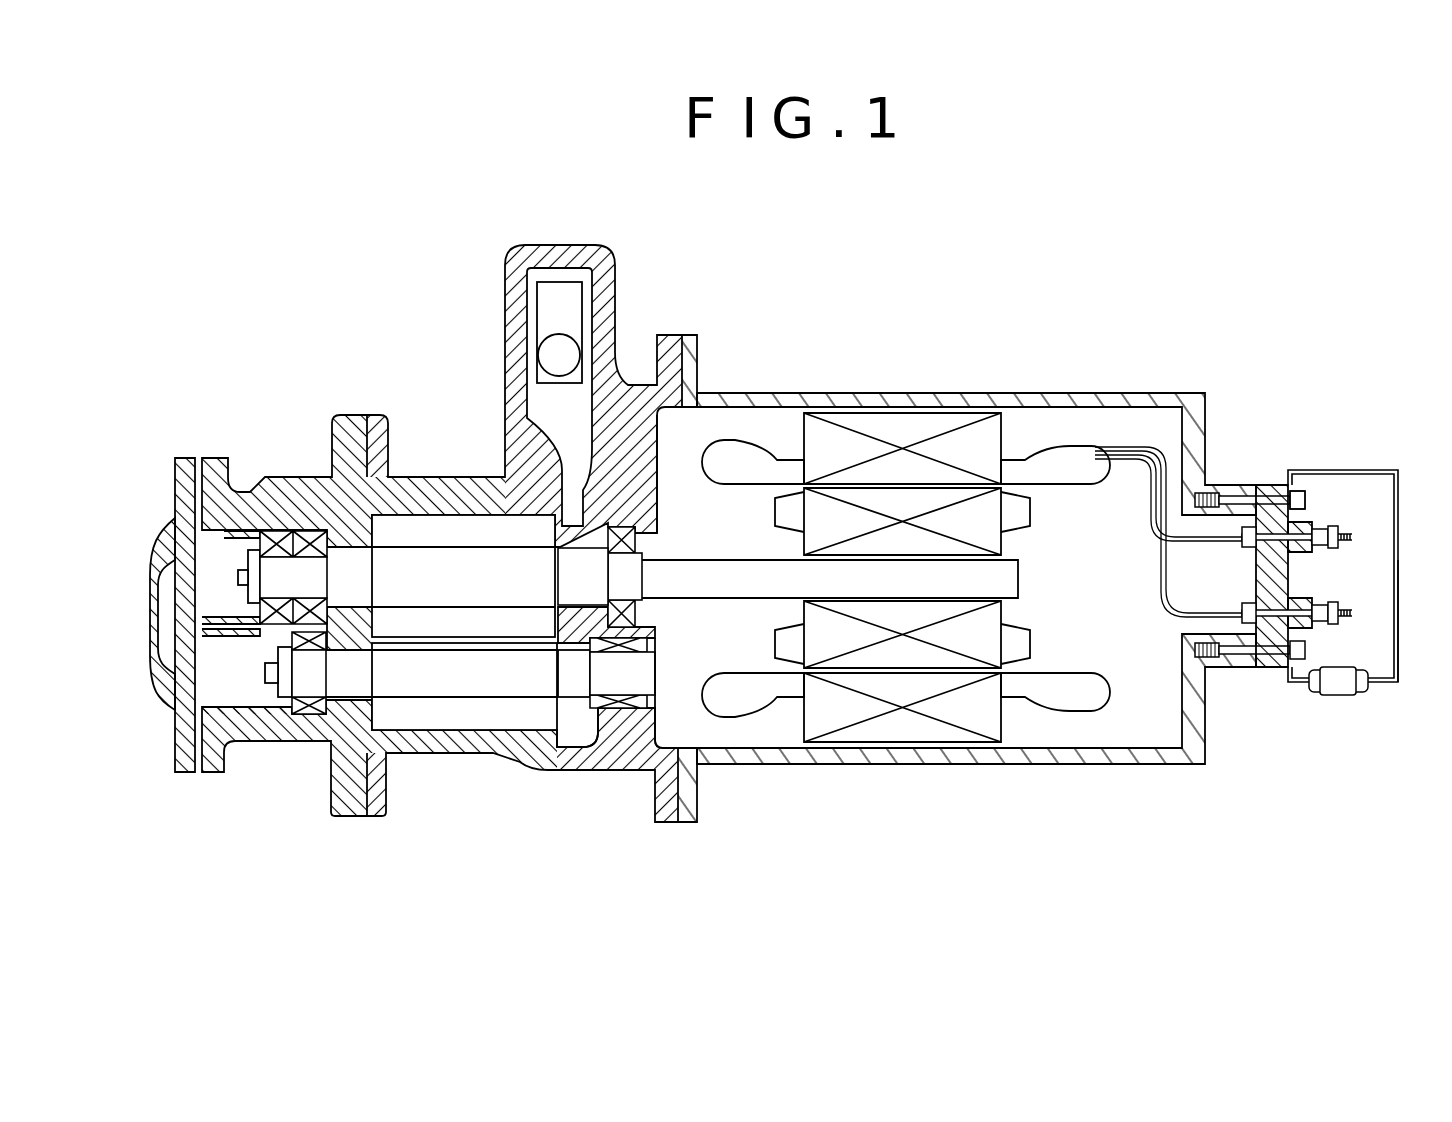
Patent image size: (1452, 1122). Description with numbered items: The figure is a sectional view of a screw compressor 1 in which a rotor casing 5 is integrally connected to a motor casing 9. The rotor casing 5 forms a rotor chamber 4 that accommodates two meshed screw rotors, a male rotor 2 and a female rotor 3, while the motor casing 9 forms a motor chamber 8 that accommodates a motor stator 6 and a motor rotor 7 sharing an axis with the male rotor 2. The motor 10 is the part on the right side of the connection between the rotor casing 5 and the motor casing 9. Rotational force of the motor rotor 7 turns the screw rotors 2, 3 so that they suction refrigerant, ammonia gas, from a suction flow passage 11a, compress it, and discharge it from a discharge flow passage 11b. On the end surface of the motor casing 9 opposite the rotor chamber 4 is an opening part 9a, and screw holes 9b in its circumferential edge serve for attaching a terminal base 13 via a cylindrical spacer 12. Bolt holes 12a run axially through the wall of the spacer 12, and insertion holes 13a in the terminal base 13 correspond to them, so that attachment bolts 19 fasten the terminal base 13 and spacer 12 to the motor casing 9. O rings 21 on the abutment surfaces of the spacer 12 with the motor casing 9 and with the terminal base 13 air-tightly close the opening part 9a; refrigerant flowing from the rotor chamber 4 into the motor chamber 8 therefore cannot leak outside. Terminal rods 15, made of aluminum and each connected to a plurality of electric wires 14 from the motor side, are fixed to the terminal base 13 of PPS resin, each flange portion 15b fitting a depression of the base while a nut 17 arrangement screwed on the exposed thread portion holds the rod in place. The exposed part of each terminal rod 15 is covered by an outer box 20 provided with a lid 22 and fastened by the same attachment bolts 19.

The screw compressor 1 is at (711, 308).
The male rotor 2 is at (415, 553).
The female rotor 3 is at (425, 685).
The rotor chamber 4 is at (573, 735).
The rotor casing 5 is at (488, 762).
The motor stator 6 is at (888, 420).
The motor rotor 7 is at (943, 505).
The motor chamber 8 is at (1130, 727).
The motor casing 9 is at (1076, 390).
The opening part 9a is at (1192, 628).
The screw holes 9b is at (1200, 485).
The motor 10 is at (1005, 334).
The suction flow passage 11a is at (543, 452).
The discharge flow passage 11b is at (310, 714).
The spacer 12 is at (1230, 483).
The bolt holes 12a is at (1262, 657).
The terminal base 13 is at (1278, 462).
The insertion holes 13a is at (1258, 466).
The electric wires 14 is at (1138, 445).
The terminal rod 15 is at (1346, 526).
The flange portion 15b is at (1275, 648).
The nut 17 is at (1330, 644).
The attachment bolts 19 is at (1303, 492).
The outer box 20 is at (1383, 468).
The O rings 21 is at (1265, 632).
The lid 22 is at (1399, 632).